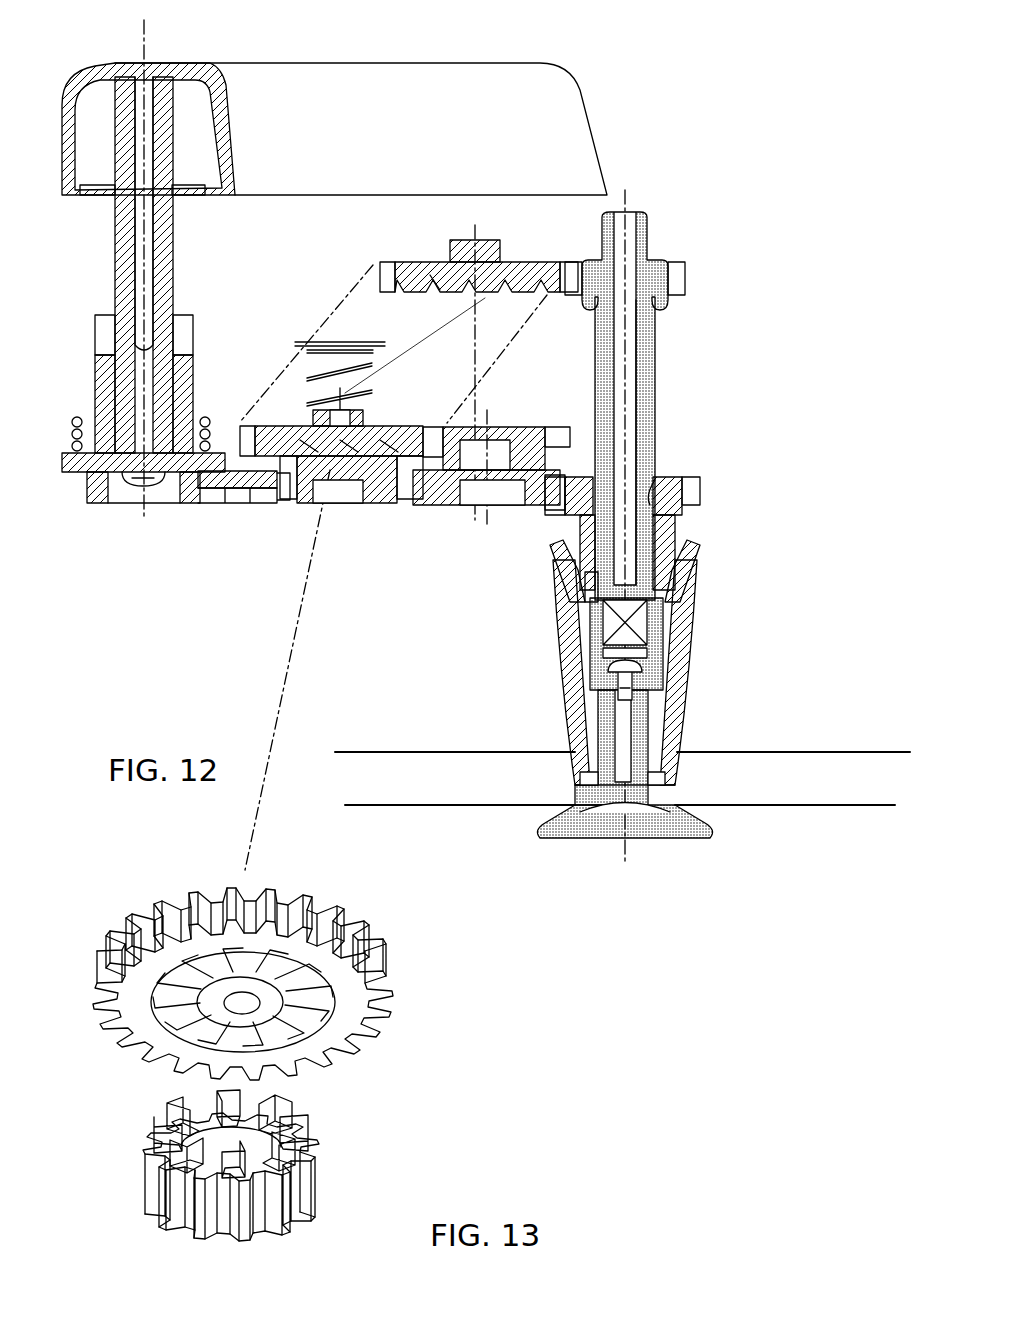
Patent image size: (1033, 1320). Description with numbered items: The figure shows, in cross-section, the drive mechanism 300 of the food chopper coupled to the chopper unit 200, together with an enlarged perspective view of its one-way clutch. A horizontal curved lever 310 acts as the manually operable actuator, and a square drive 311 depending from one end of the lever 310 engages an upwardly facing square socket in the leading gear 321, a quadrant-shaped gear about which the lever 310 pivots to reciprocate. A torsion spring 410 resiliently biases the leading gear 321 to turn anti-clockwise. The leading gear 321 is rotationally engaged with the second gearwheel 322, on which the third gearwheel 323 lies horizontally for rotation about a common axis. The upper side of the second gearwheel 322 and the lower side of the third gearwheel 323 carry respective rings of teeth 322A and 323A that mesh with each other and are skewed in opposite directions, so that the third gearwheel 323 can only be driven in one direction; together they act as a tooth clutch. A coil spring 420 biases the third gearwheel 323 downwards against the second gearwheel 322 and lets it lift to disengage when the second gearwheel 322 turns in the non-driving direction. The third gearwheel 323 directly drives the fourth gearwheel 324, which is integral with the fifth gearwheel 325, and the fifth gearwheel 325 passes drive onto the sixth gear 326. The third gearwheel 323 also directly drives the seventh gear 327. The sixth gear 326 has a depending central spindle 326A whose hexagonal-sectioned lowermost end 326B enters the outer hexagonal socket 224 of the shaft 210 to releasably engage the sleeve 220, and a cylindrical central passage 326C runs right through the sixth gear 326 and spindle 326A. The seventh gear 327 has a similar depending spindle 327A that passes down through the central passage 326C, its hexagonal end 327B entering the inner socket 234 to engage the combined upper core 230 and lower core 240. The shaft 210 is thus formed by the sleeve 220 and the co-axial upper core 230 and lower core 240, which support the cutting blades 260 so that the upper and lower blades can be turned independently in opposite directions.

In FIG. 12, the lever 310 is at (400, 88).
In FIG. 12, the drive mechanism 300 is at (740, 137).
In FIG. 12, the square drive 311 is at (122, 235).
In FIG. 12, the torsion spring 410 is at (70, 445).
In FIG. 12, the leading gear 321 is at (218, 490).
In FIG. 12, the third gearwheel 323 is at (263, 438).
In FIG. 13, the third gearwheel 323 is at (125, 1018).
In FIG. 12, the ring of teeth of the third gearwheel 323A is at (390, 433).
In FIG. 13, the ring of teeth of the third gearwheel 323A is at (175, 1010).
In FIG. 12, the coil spring 420 is at (317, 372).
In FIG. 12, the second gearwheel 322 is at (375, 505).
In FIG. 13, the second gearwheel 322 is at (293, 1210).
In FIG. 12, the ring of teeth of the second gearwheel 322A is at (368, 450).
In FIG. 13, the ring of teeth of the second gearwheel 322A is at (305, 1135).
In FIG. 12, the fourth gearwheel 324 is at (510, 445).
In FIG. 12, the fifth gearwheel 325 is at (445, 505).
In FIG. 12, the seventh gear 327 is at (650, 270).
In FIG. 12, the spindle of the seventh gear 327A is at (648, 395).
In FIG. 12, the hexagonal-sectioned lowermost end of the spindle 327B is at (640, 632).
In FIG. 12, the sixth gear 326 is at (672, 485).
In FIG. 12, the spindle of the sixth gear 326A is at (662, 540).
In FIG. 12, the hexagonal-sectioned lowermost end of the spindle 326B is at (665, 580).
In FIG. 12, the cylindrical central passage 326C is at (648, 490).
In FIG. 12, the hexagonal socket 224 is at (590, 565).
In FIG. 12, the second hexagonal socket 234 is at (640, 618).
In FIG. 12, the shaft 210 is at (517, 654).
In FIG. 12, the upper core 230 is at (660, 673).
In FIG. 12, the sleeve 220 is at (585, 700).
In FIG. 12, the lower core 240 is at (652, 745).
In FIG. 12, the cutting blades 260 is at (415, 752).
In FIG. 12, the chopper unit 200 is at (728, 885).